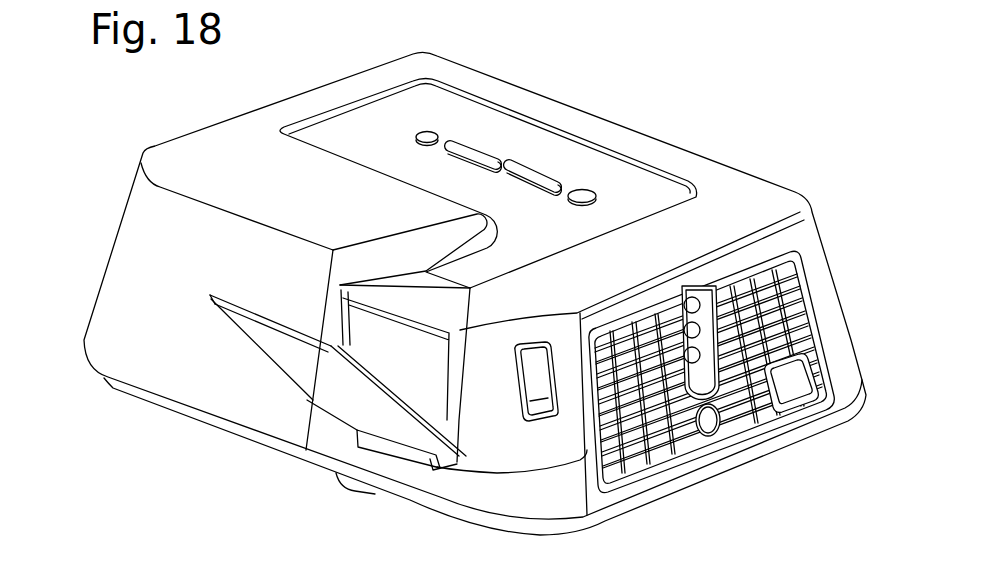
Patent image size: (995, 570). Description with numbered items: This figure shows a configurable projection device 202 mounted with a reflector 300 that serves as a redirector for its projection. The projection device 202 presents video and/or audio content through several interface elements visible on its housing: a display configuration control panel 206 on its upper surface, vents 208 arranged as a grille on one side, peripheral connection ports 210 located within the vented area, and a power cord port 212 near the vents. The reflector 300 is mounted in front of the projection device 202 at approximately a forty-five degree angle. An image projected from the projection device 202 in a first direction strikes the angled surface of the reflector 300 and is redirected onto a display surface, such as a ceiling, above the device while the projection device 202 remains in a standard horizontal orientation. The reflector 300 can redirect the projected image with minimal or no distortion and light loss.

The projection device 202 is at (137, 280).
The display configuration control panel 206 is at (578, 162).
The vents 208 is at (799, 322).
The peripheral connection ports 210 is at (704, 346).
The power cord port 212 is at (793, 387).
The reflector 300 is at (349, 409).